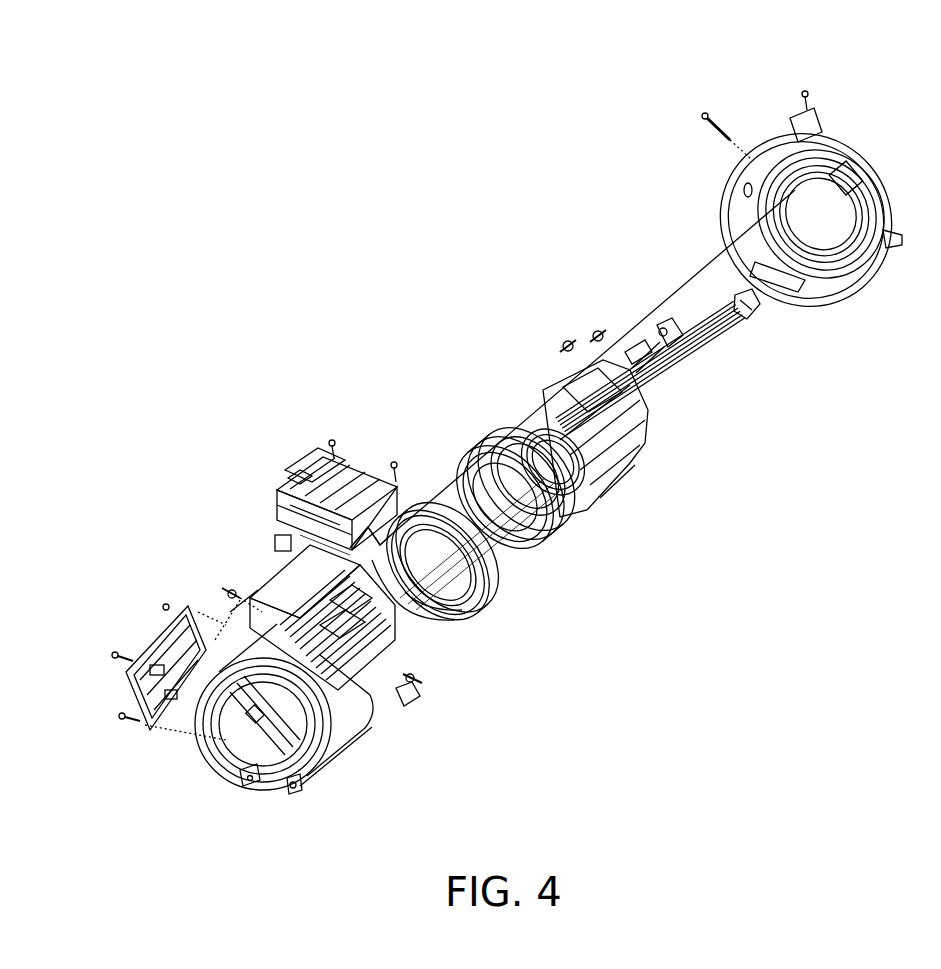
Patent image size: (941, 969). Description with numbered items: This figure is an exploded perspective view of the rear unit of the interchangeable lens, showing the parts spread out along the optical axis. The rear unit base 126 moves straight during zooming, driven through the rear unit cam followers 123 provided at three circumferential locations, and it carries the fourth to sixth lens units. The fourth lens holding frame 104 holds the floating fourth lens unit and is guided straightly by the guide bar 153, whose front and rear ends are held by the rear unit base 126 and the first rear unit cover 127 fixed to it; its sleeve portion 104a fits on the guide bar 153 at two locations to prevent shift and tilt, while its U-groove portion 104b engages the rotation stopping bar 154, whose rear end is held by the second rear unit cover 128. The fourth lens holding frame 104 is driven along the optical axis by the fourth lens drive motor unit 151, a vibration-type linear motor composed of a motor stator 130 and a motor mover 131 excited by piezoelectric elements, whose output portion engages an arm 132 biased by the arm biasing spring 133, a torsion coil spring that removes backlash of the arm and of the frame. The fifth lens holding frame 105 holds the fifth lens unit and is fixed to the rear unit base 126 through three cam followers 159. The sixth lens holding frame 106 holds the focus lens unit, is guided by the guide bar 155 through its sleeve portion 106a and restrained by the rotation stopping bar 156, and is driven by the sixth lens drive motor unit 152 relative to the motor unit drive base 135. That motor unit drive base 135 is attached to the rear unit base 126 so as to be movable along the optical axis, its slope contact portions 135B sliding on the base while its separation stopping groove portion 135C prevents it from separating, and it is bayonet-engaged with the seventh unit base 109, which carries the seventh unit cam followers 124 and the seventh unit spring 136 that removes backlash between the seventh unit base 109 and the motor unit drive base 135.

The fourth lens holding frame 104 is at (423, 515).
The sleeve portion 104a is at (385, 580).
The U-groove portion 104b is at (487, 550).
The fifth lens holding frame 105 is at (478, 440).
The sixth lens holding frame 106 is at (603, 477).
The sleeve portion 106a is at (563, 435).
The seventh unit base 109 is at (843, 173).
The rear unit cam followers 123 is at (408, 697).
The seventh unit cam followers 124 is at (727, 128).
The rear unit base 126 is at (380, 737).
The first rear unit cover 127 is at (658, 326).
The second rear unit cover 128 is at (760, 310).
The motor stator 130 is at (345, 435).
The motor mover 131 is at (297, 487).
The arm 132 is at (568, 342).
The arm biasing spring 133 is at (598, 333).
The motor unit drive base 135 is at (253, 580).
The slope contact portion 135B is at (335, 637).
The separation stopping groove portion 135C is at (283, 543).
The seventh unit spring 136 is at (818, 124).
The fourth lens drive motor unit 151 is at (150, 643).
The sixth lens drive motor unit 152 is at (300, 450).
The guide bar 153 is at (633, 360).
The rotation stopping bar 154 is at (700, 342).
The guide bar 155 is at (700, 373).
The rotation stopping bar 156 is at (640, 360).
The cam followers 159 is at (232, 593).